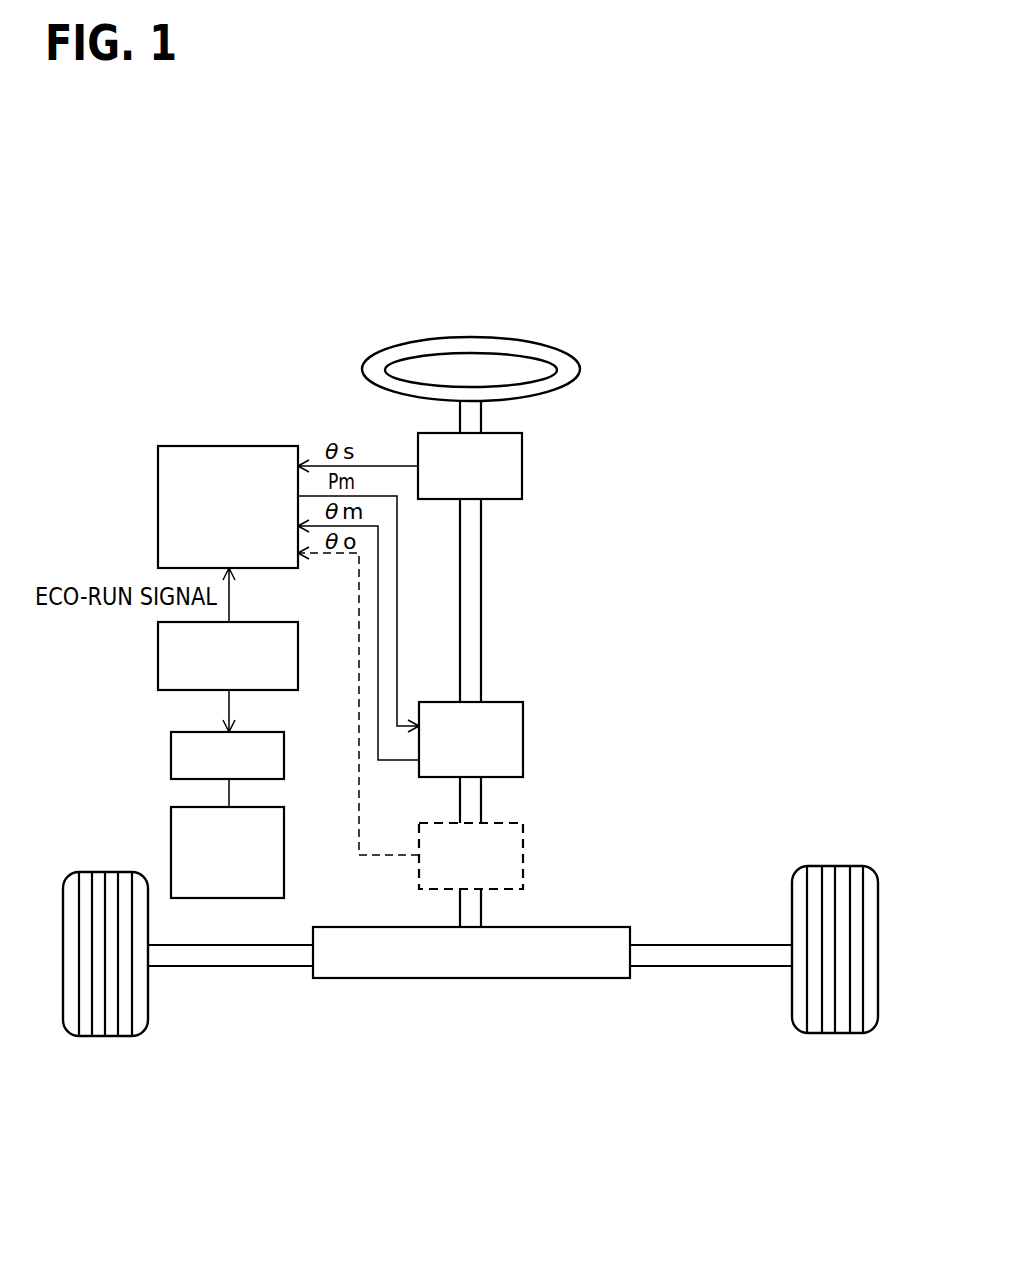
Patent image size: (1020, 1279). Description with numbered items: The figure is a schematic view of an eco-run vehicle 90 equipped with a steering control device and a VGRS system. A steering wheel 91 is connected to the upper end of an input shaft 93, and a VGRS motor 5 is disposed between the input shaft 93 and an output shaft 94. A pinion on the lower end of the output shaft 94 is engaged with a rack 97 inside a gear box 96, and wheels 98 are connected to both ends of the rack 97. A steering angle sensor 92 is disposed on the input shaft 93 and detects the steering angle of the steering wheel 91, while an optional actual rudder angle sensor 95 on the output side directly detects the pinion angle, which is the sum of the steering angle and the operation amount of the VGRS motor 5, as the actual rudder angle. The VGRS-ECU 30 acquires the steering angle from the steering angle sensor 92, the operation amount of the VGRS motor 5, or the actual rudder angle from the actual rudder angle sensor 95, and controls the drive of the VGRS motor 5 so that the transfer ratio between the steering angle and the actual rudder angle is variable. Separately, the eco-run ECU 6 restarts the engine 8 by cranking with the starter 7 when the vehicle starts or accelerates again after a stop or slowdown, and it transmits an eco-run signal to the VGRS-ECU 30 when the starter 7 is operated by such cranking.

The eco-run vehicle 90 is at (244, 379).
The steering wheel 91 is at (581, 368).
The steering angle sensor 92 is at (523, 466).
The input shaft 93 is at (482, 662).
The VGRS motor 5 is at (524, 737).
The output shaft 94 is at (482, 798).
The actual rudder angle sensor 95 is at (524, 855).
The gear box 96 is at (440, 963).
The rack 97 is at (252, 955).
The wheels 98 is at (93, 1036).
The VGRS-ECU 30 is at (158, 508).
The eco-run ECU 6 is at (158, 660).
The starter 7 is at (171, 760).
The engine 8 is at (171, 838).